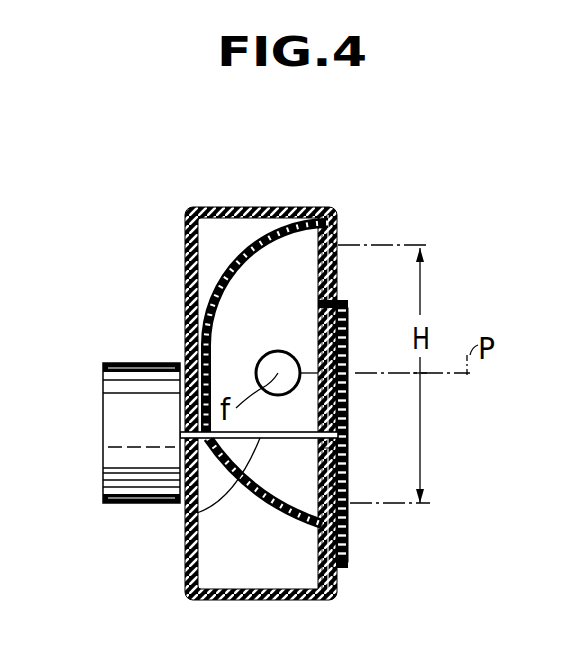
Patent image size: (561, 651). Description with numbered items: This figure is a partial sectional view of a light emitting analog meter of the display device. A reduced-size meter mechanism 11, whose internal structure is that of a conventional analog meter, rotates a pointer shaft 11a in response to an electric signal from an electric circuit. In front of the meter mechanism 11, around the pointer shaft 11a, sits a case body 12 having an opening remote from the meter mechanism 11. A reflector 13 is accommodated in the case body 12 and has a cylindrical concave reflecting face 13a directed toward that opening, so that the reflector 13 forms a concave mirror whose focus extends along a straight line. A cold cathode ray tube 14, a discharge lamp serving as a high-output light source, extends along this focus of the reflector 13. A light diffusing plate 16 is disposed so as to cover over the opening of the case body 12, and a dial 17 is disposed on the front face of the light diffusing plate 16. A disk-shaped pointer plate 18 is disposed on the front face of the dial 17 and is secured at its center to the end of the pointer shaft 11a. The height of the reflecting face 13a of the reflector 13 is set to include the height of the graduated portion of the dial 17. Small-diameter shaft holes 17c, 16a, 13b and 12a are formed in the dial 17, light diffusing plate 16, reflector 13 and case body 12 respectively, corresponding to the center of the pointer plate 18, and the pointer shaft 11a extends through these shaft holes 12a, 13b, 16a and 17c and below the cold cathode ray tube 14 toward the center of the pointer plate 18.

The meter mechanism 11 is at (138, 362).
The pointer shaft 11a is at (190, 522).
The case body 12 is at (252, 205).
The shaft hole 12a is at (180, 426).
The reflector 13 is at (303, 205).
The cylindrical concave reflecting face 13a is at (234, 293).
The shaft hole 13b is at (187, 458).
The cold cathode ray tube 14 is at (340, 383).
The light diffusing plate 16 is at (339, 229).
The shaft hole 16a is at (340, 482).
The dial 17 is at (338, 272).
The shaft hole 17c is at (338, 456).
The pointer plate 18 is at (345, 318).